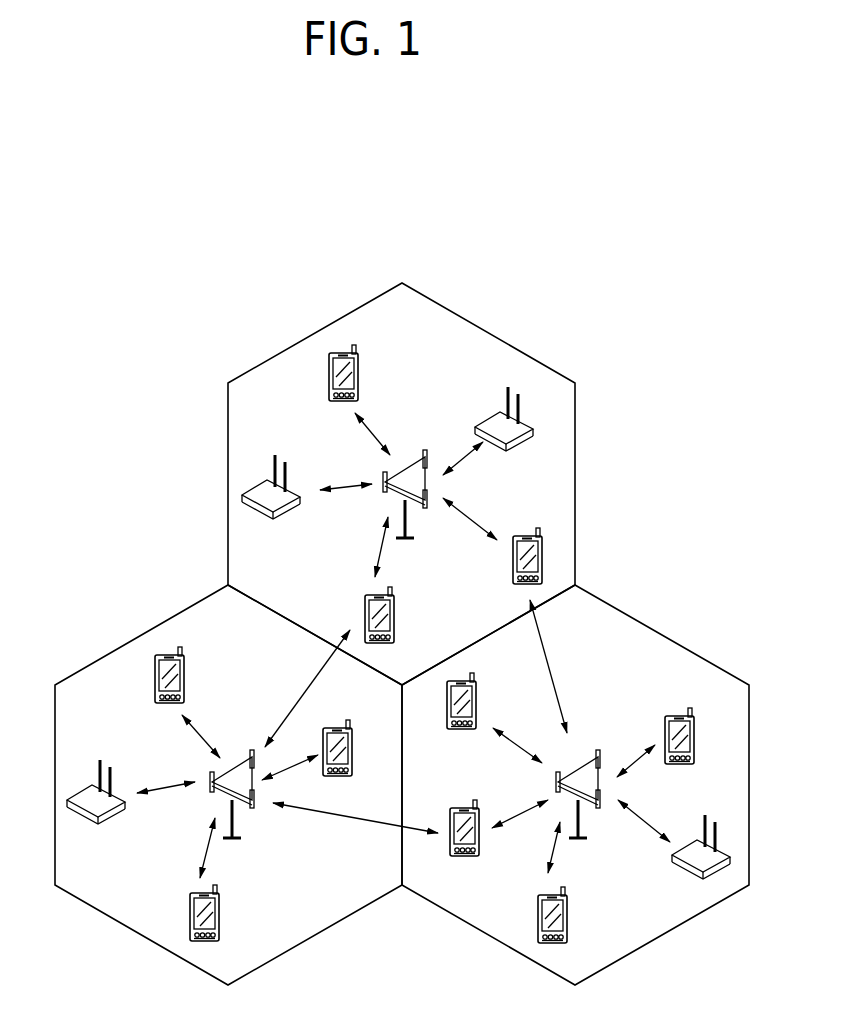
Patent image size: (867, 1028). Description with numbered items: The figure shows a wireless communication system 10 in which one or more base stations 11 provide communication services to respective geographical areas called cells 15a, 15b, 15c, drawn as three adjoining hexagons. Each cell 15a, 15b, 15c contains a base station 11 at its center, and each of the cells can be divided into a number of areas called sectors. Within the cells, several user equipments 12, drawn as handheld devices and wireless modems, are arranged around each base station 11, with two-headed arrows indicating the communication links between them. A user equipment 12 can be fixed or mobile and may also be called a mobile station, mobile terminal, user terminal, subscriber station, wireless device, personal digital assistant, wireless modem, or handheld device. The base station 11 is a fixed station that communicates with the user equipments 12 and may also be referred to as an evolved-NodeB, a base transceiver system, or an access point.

The wireless communication system 10 is at (650, 388).
The base station 11 is at (408, 460).
The user equipment 12 is at (358, 375).
The cell 15a is at (575, 468).
The cell 15b is at (687, 645).
The cell 15c is at (120, 645).